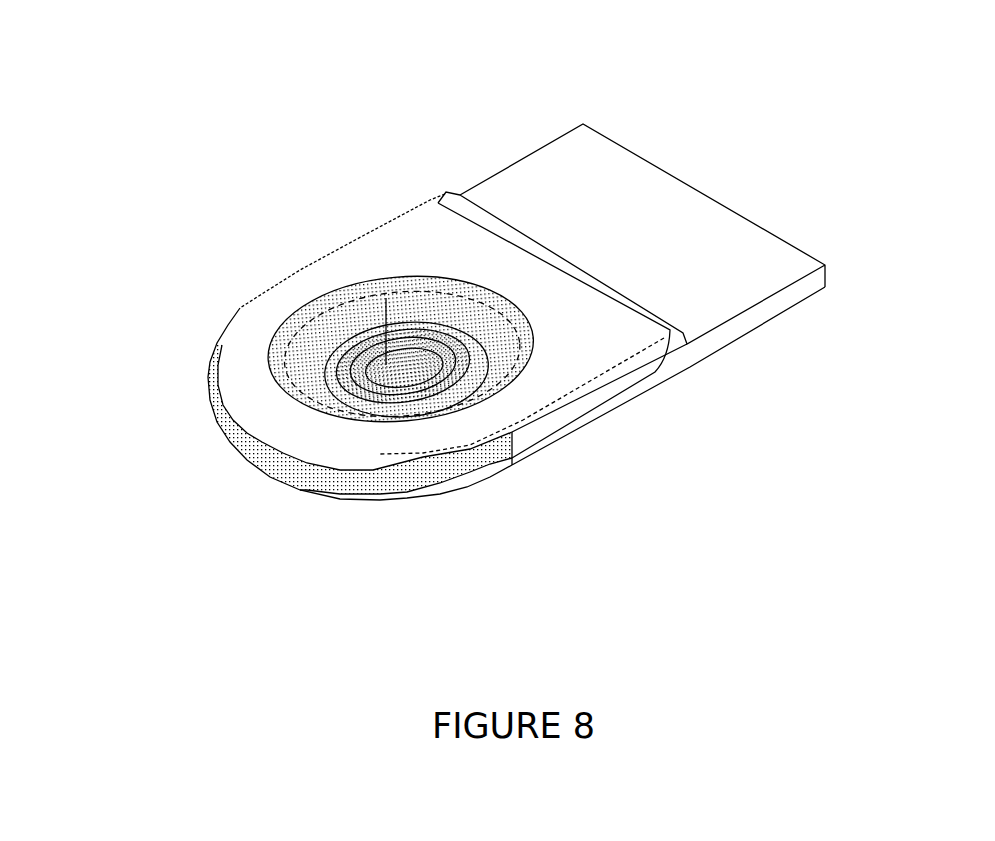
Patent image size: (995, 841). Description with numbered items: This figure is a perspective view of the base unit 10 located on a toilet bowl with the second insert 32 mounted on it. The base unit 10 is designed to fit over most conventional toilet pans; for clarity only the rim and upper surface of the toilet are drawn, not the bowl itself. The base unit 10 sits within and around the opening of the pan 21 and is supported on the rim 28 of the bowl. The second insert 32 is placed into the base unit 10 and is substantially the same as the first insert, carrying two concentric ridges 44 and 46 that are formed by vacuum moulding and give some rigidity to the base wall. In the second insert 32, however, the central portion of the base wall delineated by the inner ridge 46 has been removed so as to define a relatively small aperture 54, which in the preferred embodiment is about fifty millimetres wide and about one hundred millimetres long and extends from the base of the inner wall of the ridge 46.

The base unit 10 is at (598, 367).
The pan 21 is at (684, 360).
The rim 28 is at (307, 483).
The second insert 32 is at (388, 300).
The ridge 44 is at (392, 348).
The inner ridge 46 is at (297, 408).
The aperture 54 is at (403, 372).